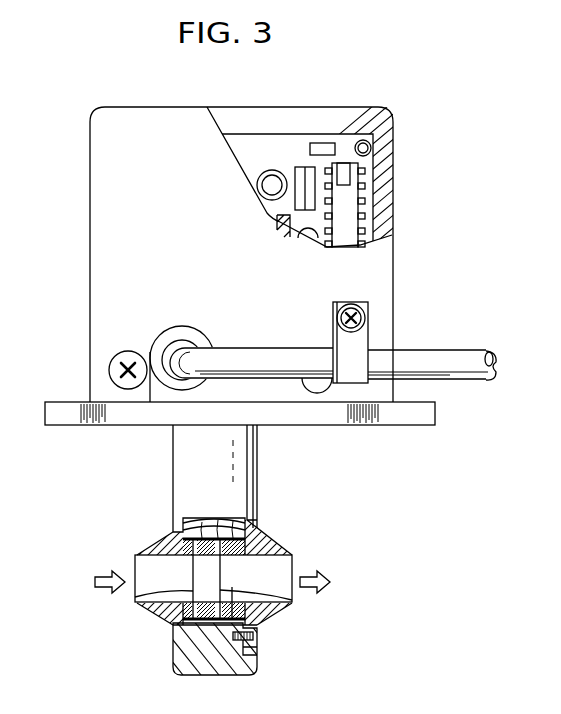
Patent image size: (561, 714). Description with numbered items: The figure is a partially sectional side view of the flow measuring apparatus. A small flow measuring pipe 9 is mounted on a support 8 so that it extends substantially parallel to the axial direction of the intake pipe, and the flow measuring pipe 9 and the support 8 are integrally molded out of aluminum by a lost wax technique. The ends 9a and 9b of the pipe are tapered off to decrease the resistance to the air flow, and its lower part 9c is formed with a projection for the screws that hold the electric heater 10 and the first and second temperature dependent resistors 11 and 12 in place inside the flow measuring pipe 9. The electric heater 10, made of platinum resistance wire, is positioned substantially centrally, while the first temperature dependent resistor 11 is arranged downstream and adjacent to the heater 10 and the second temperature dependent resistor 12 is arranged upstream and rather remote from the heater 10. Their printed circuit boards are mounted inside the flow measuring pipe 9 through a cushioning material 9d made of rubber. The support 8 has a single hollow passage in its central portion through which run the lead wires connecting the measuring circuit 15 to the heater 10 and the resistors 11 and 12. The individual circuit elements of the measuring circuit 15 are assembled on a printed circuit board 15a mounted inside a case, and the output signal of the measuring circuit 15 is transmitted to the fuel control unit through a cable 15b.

The support 8 is at (257, 492).
The flow measuring pipe 9 is at (250, 603).
The end of flow measuring pipe 9a is at (170, 537).
The end of flow measuring pipe 9b is at (264, 541).
The lower part of flow measuring pipe 9c is at (174, 658).
The cushioning material 9d is at (186, 623).
The electric heater 10 is at (253, 637).
The first temperature dependent resistor 11 is at (288, 598).
The second temperature dependent resistor 12 is at (137, 597).
The measuring circuit 15 is at (372, 183).
The printed circuit board 15a is at (327, 134).
The cable 15b is at (453, 352).